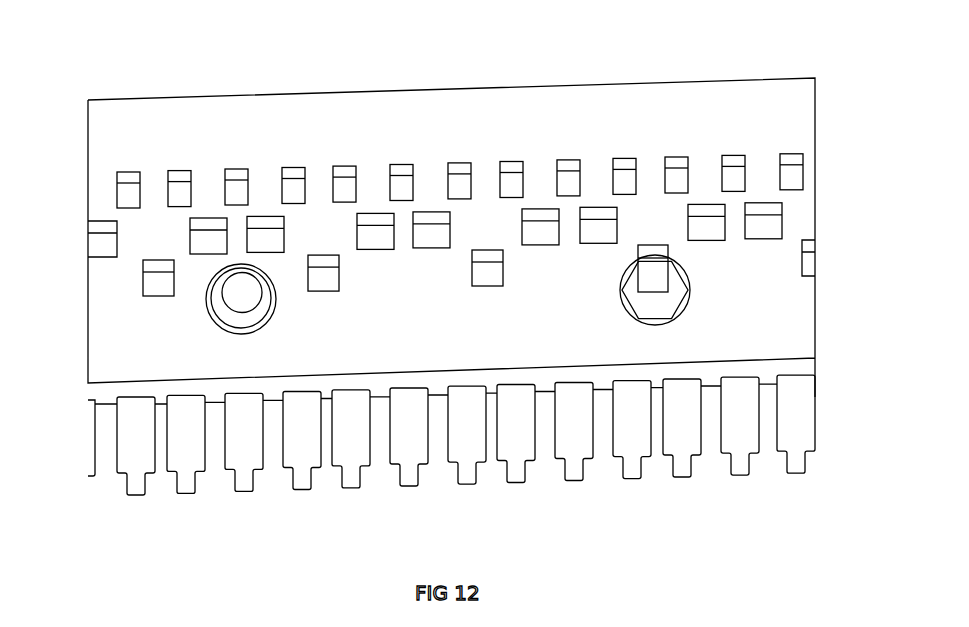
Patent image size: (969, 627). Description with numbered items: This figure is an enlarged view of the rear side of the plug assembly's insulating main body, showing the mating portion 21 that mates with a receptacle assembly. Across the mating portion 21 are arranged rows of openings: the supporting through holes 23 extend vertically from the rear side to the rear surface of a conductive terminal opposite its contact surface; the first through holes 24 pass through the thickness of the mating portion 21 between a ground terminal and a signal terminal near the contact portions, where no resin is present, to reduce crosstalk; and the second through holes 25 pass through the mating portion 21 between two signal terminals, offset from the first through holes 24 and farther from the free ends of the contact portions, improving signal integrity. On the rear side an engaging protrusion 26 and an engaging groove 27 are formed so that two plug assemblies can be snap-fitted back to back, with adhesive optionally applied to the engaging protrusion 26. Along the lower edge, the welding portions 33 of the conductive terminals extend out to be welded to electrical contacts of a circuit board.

The mating portion 21 is at (695, 117).
The supporting through hole 23 is at (563, 178).
The first through hole 24 is at (267, 237).
The second through hole 25 is at (490, 262).
The engaging protrusion 26 is at (235, 290).
The engaging groove 27 is at (650, 292).
The welding portion 33 is at (355, 443).